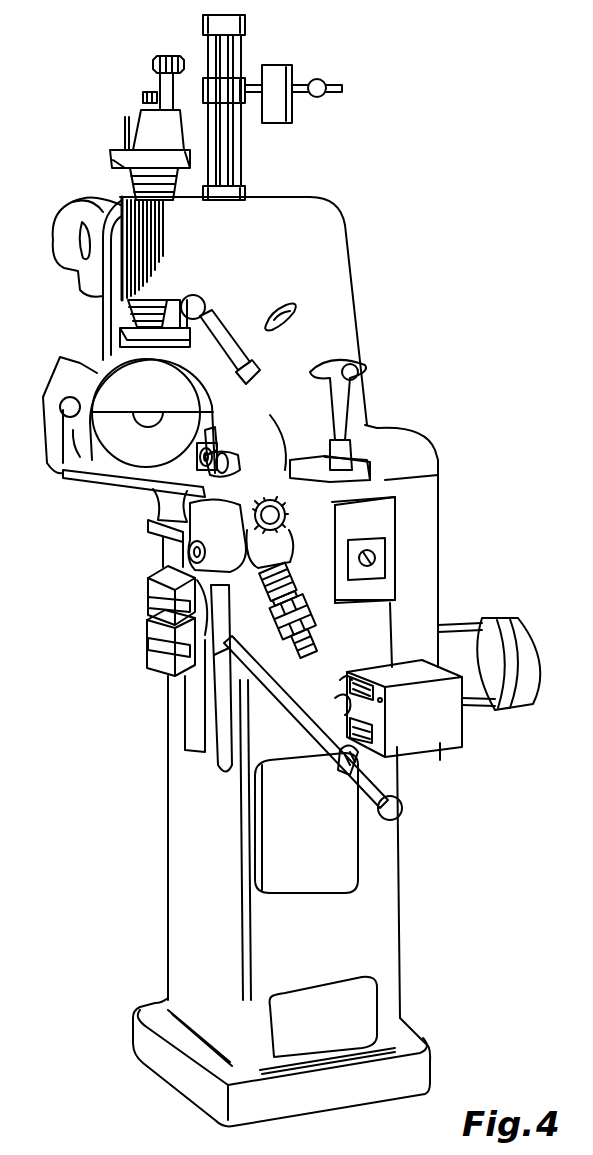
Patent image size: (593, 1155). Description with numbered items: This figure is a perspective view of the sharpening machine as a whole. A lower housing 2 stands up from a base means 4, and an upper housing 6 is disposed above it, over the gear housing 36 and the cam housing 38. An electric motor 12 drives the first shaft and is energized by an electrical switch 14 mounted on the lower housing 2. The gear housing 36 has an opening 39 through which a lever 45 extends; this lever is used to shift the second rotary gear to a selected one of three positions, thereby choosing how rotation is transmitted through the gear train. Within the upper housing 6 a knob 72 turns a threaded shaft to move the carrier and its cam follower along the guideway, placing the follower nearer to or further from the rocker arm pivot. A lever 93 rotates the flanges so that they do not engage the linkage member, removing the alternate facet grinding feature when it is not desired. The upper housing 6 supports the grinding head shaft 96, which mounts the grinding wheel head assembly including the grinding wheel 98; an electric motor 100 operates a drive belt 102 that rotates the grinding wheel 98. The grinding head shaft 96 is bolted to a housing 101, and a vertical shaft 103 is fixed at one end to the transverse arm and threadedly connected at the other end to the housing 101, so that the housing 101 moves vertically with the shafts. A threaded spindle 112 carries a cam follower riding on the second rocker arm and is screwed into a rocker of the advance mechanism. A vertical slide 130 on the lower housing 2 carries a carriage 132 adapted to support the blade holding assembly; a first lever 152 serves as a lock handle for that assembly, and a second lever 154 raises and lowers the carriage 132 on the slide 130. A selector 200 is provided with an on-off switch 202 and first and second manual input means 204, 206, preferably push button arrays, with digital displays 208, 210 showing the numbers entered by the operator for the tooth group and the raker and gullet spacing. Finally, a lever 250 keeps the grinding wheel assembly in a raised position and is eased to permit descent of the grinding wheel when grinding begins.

The lower housing 2 is at (170, 885).
The base means 4 is at (415, 1072).
The upper housing 6 is at (358, 296).
The electric motor 12 is at (508, 620).
The electrical switch 14 is at (440, 565).
The gear housing 36 is at (385, 480).
The cam housing 38 is at (150, 493).
The opening 39 is at (350, 462).
The lever 45 is at (348, 398).
The knob 72 is at (215, 543).
The lever 93 is at (288, 316).
The grinding head shaft 96 is at (148, 91).
The grinding wheel 98 is at (160, 452).
The electric motor 100 is at (72, 205).
The housing 101 is at (140, 118).
The drive belt 102 is at (103, 312).
The vertical shaft 103 is at (152, 69).
The threaded spindle 112 is at (320, 645).
The vertical slide 130 is at (172, 704).
The carriage 132 is at (147, 622).
The first lever 152 is at (232, 755).
The second lever 154 is at (402, 808).
The selector 200 is at (440, 748).
The on-off switch 202 is at (385, 703).
The first manual input means 204 is at (345, 712).
The second manual input means 206 is at (340, 762).
The first digital display 208 is at (345, 687).
The second digital display 210 is at (380, 729).
The lever 250 is at (210, 312).